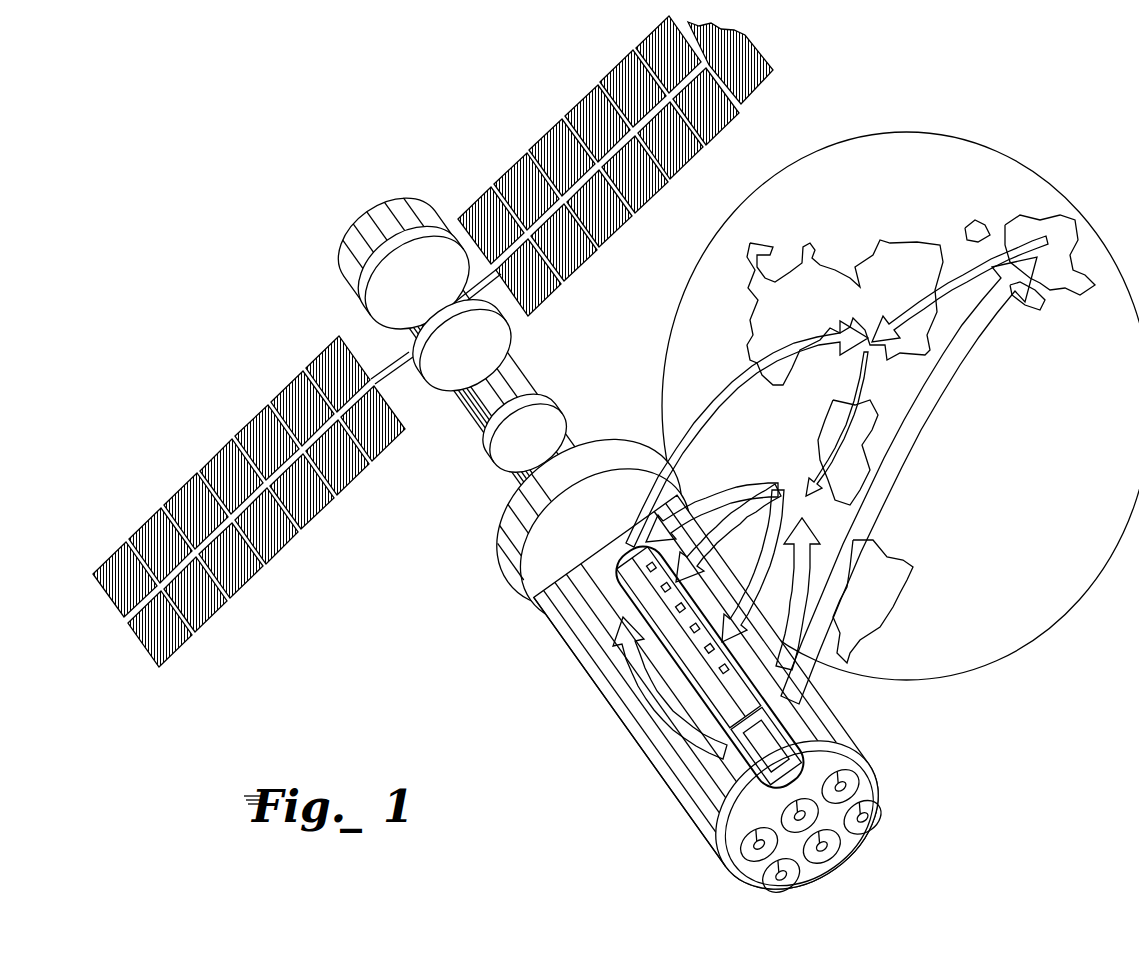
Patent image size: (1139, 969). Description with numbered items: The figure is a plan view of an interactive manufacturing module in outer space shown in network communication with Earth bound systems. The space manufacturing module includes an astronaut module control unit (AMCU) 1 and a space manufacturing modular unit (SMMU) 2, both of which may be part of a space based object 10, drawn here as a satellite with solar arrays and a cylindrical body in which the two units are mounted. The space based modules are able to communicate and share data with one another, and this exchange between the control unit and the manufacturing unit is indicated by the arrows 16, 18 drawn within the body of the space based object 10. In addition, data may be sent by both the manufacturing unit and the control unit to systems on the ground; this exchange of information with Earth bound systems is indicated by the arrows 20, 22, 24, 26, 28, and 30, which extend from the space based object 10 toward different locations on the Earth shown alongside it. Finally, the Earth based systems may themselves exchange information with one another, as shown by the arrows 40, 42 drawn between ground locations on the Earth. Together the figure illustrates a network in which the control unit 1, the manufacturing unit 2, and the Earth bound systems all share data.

The space based object 10 is at (462, 609).
The astronaut module control unit 1 is at (567, 637).
The space manufacturing modular unit 2 is at (720, 803).
The arrow 16 is at (632, 672).
The arrow 18 is at (665, 718).
The arrow 20 is at (900, 406).
The arrow 22 is at (775, 680).
The arrow 24 is at (766, 565).
The arrow 26 is at (748, 497).
The arrow 28 is at (712, 497).
The arrow 30 is at (730, 390).
The arrow 40 is at (977, 268).
The arrow 42 is at (861, 393).